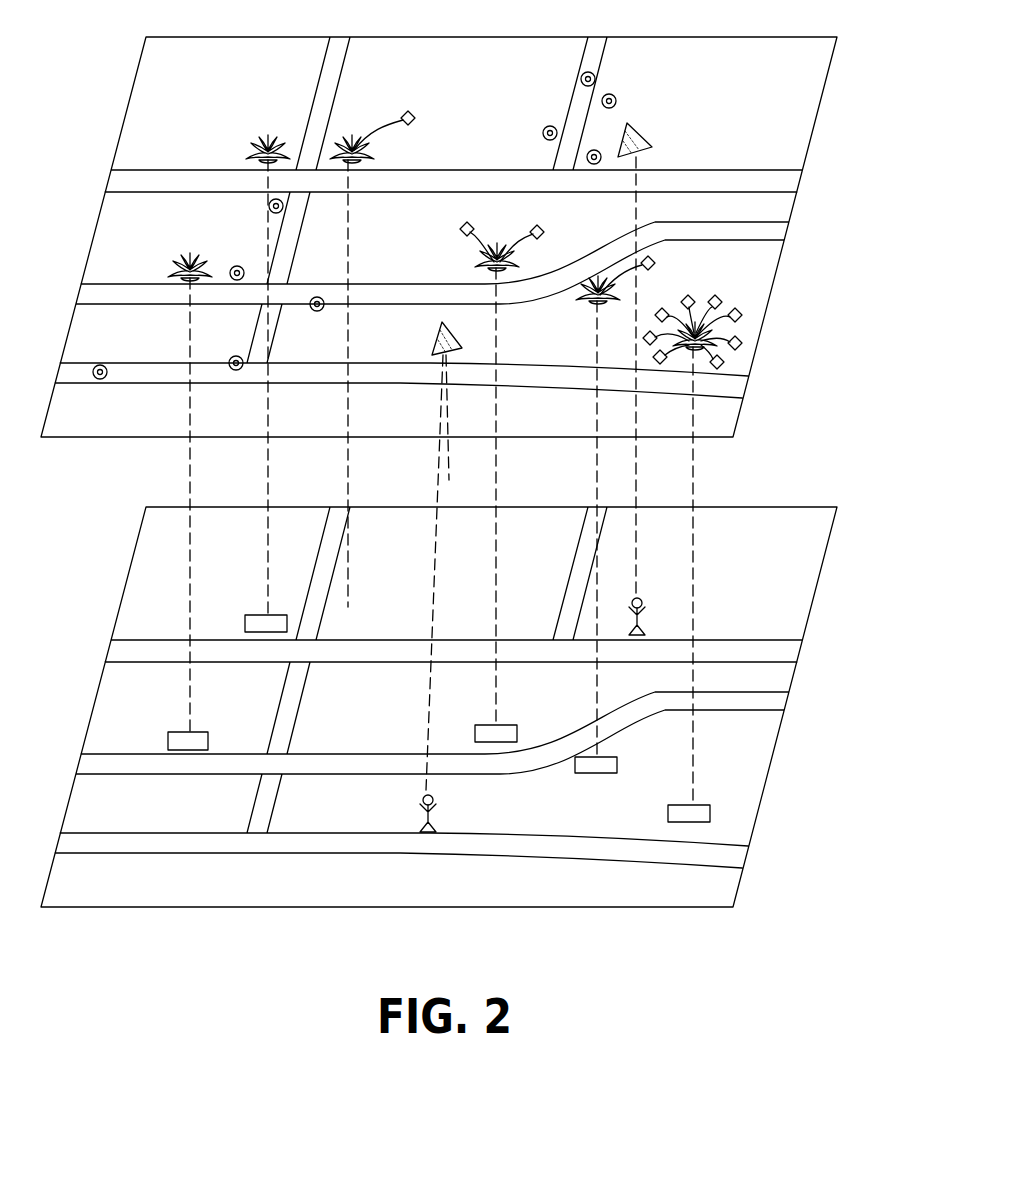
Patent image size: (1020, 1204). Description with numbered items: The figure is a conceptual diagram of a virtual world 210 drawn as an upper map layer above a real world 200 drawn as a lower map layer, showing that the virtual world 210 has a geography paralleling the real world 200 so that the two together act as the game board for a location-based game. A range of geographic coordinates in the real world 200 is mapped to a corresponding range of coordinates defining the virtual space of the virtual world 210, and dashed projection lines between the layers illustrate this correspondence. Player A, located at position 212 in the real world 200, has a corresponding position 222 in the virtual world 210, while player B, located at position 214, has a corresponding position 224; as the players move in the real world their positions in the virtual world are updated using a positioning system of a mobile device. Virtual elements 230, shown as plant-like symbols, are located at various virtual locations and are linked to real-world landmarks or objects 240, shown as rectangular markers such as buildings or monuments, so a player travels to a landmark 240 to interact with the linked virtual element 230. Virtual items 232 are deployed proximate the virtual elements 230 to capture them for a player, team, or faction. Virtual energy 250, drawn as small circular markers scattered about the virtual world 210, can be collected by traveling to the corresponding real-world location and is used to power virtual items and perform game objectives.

The real world 200 is at (806, 615).
The virtual world 210 is at (806, 150).
The position of player A in the real world 212 is at (422, 800).
The position of player B in the real world 214 is at (643, 602).
The corresponding position of player A in the virtual world 222 is at (462, 348).
The corresponding position of player B in the virtual world 224 is at (655, 143).
The virtual element 230 is at (265, 142).
The virtual item 232 is at (416, 112).
The real world landmark or object 240 is at (258, 614).
The virtual energy 250 is at (618, 98).